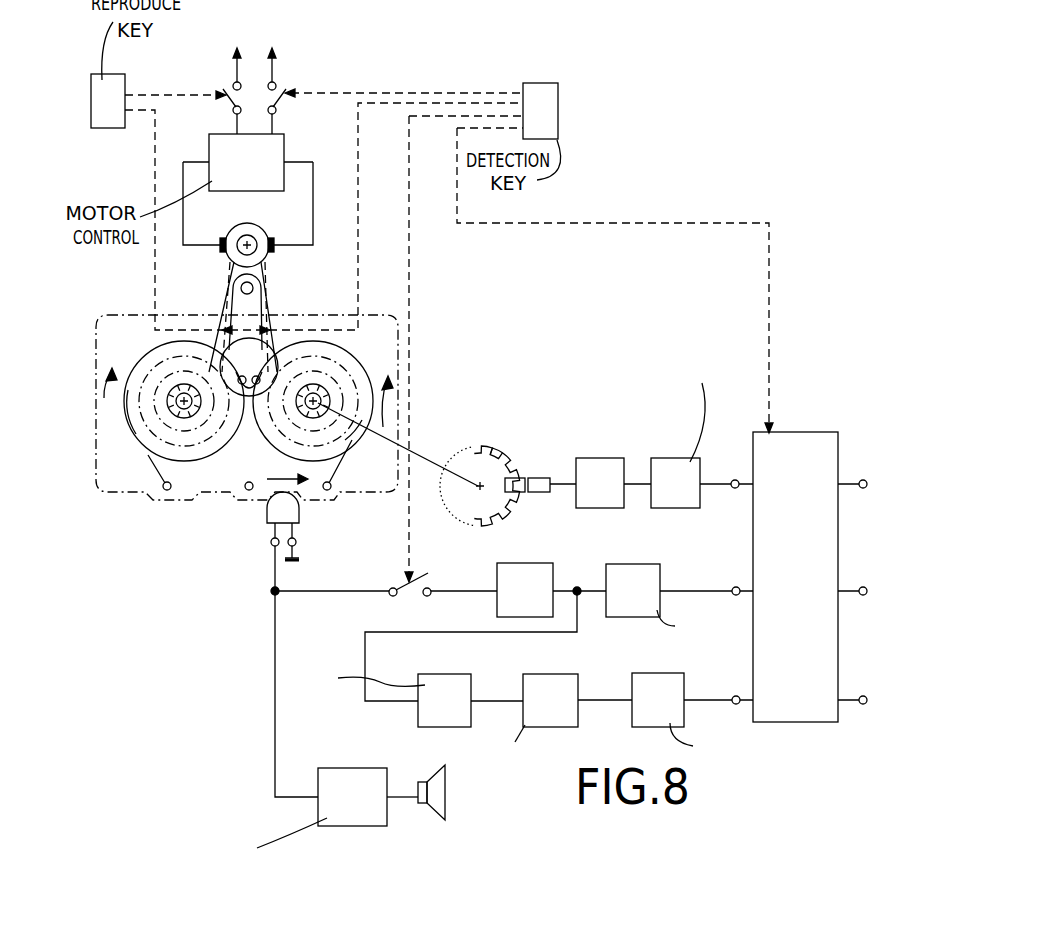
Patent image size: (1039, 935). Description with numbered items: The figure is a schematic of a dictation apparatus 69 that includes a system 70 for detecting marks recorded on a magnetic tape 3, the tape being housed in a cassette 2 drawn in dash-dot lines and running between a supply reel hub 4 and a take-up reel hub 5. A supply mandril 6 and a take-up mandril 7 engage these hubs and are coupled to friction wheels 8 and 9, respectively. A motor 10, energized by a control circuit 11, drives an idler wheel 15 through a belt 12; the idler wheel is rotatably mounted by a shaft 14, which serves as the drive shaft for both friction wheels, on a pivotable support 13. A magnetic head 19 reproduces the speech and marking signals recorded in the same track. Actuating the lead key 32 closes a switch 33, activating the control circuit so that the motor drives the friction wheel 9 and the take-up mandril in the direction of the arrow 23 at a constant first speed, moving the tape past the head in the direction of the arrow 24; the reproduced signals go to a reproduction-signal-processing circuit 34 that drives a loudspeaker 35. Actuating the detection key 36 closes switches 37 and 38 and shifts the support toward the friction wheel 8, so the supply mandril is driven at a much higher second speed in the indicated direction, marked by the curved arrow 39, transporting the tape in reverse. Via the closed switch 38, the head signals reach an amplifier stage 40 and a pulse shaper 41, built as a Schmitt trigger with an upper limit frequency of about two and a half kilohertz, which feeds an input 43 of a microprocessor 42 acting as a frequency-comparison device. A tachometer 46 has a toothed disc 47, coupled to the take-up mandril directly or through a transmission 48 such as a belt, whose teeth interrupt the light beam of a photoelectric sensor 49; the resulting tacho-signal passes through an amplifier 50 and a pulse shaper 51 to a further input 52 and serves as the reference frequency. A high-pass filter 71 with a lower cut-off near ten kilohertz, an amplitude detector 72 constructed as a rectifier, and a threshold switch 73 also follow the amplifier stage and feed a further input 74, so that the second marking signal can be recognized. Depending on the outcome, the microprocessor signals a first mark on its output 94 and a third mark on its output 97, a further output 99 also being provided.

The cassette 2 is at (168, 502).
The magnetic tape 3 is at (152, 457).
The supply reel hub 4 is at (163, 353).
The take-up reel hub 5 is at (341, 356).
The supply mandril 6 is at (188, 405).
The take-up mandril 7 is at (311, 406).
The friction wheel 8 is at (136, 430).
The friction wheel 9 is at (345, 441).
The motor 10 is at (254, 229).
The control circuit 11 is at (282, 150).
The belt 12 is at (227, 278).
The pivotable support 13 is at (252, 298).
The drive shaft 14 is at (249, 410).
The idler wheel 15 is at (222, 345).
The magnetic head 19 is at (300, 513).
The arrow 23 is at (398, 393).
The arrow 24 is at (270, 478).
The lead key 32 is at (113, 129).
The switch 33 is at (226, 90).
The reproduction-signal-processing circuit 34 is at (347, 770).
The loudspeaker 35 is at (444, 785).
The key 36 is at (556, 123).
The switch 37 is at (288, 90).
The switch 38 is at (426, 573).
The supply reel rotation direction 39 is at (104, 372).
The amplifier stage 40 is at (523, 573).
The pulse shaper 41 is at (625, 565).
The microprocessor 42 is at (798, 432).
The input 43 is at (735, 587).
The tachometer 46 is at (526, 440).
The toothed disc 47 is at (496, 460).
The transmission 48 is at (443, 471).
The photoelectric sensor 49 is at (533, 478).
The amplifier 50 is at (592, 462).
The pulse shaper 51 is at (668, 460).
The further input 52 is at (736, 480).
The apparatus 69 is at (603, 170).
The system 70 is at (582, 400).
The high-pass filter 71 is at (438, 678).
The amplitude detector 72 is at (543, 675).
The switch 73 is at (645, 675).
The further input 74 is at (735, 696).
The output 94 is at (865, 480).
The output 97 is at (865, 587).
The microprocessor output 99 is at (865, 696).